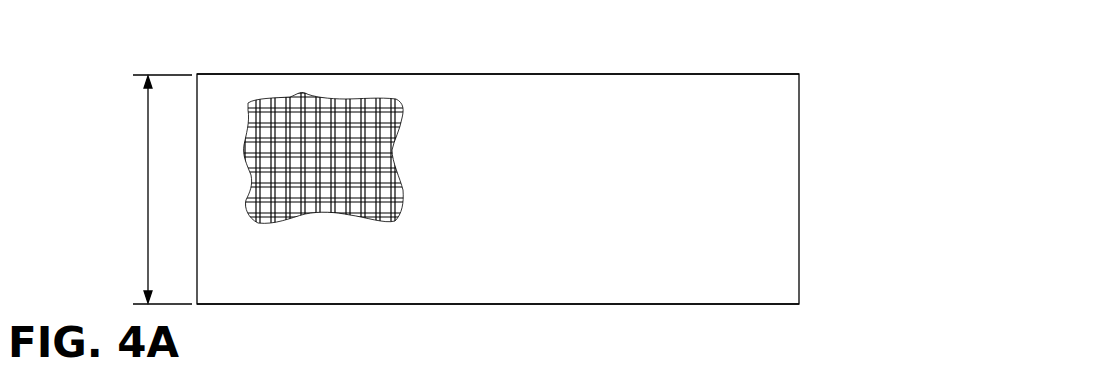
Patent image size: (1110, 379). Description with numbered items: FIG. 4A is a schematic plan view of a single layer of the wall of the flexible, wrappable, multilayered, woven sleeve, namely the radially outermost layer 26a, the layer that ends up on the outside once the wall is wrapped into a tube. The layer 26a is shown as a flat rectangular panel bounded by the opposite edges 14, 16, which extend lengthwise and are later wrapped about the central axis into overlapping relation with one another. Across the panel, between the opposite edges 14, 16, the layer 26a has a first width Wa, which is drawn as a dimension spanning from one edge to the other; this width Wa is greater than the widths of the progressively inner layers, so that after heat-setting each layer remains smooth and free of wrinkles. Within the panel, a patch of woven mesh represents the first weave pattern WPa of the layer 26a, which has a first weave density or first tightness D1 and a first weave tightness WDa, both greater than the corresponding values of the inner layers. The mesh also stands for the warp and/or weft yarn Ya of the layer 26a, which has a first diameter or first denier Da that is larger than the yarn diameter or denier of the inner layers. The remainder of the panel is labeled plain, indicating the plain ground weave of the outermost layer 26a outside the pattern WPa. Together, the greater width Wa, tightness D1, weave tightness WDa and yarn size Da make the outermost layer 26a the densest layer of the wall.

The opposite edge 14 is at (697, 73).
The opposite edge 16 is at (707, 305).
The radially outermost layer 26a is at (768, 231).
The first width Wa is at (161, 189).
The first weave pattern WPa is at (257, 95).
The first tightness D1 is at (361, 134).
The first weave tightness WDa is at (361, 134).
The warp and/or weft yarn Ya is at (361, 134).
The first diameter and/or first denier Da is at (298, 100).